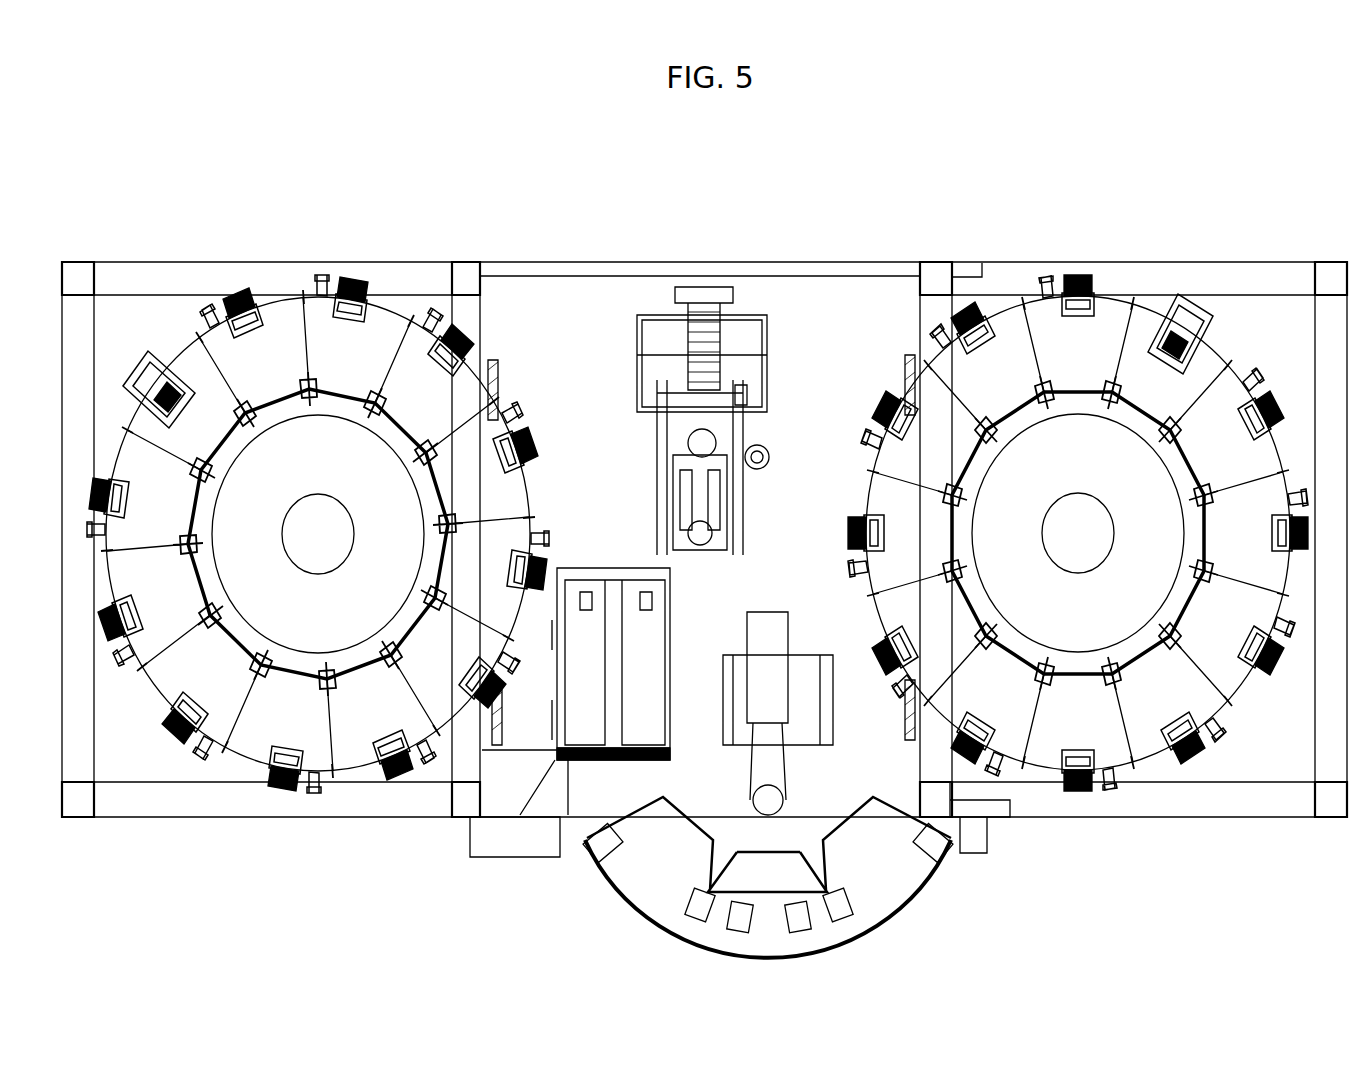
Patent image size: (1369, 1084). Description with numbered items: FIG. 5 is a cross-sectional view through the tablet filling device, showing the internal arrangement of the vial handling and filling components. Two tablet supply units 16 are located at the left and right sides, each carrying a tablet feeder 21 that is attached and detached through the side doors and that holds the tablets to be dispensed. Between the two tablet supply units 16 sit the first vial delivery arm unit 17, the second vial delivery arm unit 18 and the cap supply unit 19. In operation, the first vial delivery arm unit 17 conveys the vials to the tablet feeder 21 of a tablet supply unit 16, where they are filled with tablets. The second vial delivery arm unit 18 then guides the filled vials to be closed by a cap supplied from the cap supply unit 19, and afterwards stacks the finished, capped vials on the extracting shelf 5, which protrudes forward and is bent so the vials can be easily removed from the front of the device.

The extracting shelf 5 is at (893, 900).
The tablet supply unit 16 is at (152, 313).
The first vial delivery arm unit 17 is at (785, 329).
The second vial delivery arm unit 18 is at (794, 619).
The cap supply unit 19 is at (686, 611).
The tablet feeder 21 is at (232, 748).